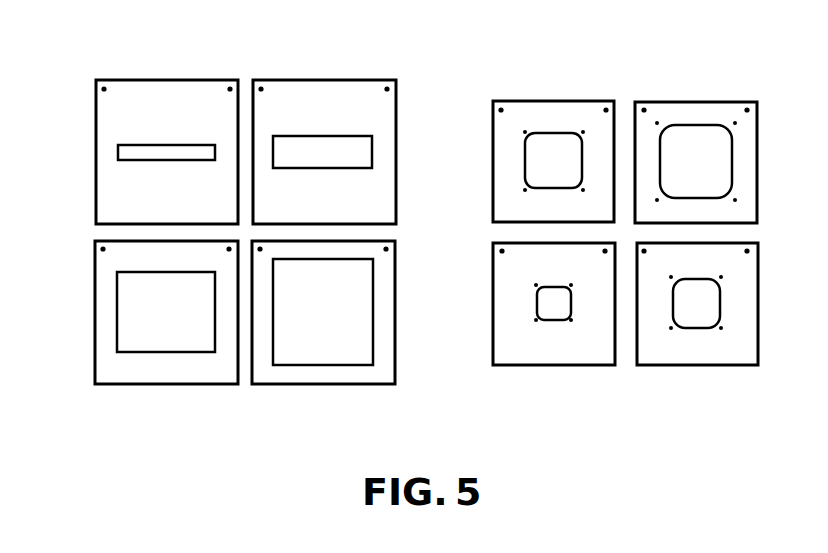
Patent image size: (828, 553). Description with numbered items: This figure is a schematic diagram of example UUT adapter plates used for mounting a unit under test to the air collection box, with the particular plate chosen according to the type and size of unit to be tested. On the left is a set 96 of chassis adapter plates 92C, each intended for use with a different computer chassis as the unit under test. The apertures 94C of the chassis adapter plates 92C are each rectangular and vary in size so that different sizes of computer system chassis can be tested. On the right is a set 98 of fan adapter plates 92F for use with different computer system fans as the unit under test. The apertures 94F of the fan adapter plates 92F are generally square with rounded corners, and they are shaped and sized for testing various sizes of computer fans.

The set of chassis adapter plates 96 is at (87, 78).
The set of fan adapter plates 98 is at (480, 93).
The chassis adapter plate 92C is at (96, 181).
The aperture 94C is at (145, 145).
The fan adapter plate 92F is at (493, 167).
The aperture 94F is at (550, 188).